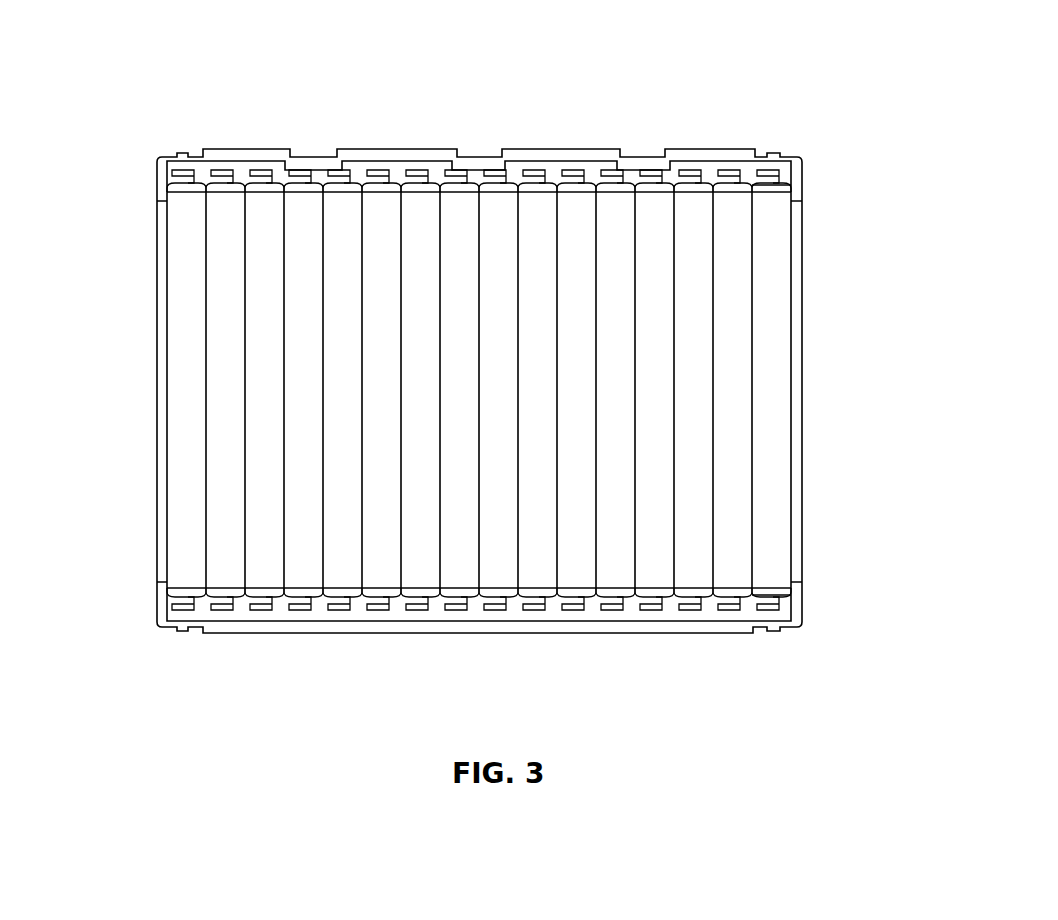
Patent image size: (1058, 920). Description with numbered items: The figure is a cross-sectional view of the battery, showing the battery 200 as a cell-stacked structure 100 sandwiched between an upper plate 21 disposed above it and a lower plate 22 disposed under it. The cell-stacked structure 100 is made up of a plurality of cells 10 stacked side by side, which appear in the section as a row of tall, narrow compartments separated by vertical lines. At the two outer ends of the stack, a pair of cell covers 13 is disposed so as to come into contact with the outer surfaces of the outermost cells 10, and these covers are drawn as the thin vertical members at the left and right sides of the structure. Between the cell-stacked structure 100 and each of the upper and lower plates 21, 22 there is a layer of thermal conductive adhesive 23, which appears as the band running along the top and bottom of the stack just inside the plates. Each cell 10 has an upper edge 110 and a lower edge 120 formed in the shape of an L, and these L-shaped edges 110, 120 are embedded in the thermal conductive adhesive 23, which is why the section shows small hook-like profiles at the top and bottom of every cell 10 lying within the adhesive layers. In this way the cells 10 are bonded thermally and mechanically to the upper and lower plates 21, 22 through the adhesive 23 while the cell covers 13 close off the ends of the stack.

The battery pack 200 is at (369, 118).
The cell-stacked structure 100 is at (815, 495).
The cell 10 is at (777, 385).
The cell cover 13 is at (160, 402).
The upper plate 21 is at (538, 156).
The lower plate 22 is at (591, 629).
The thermal conductive adhesive 23 is at (748, 170).
The upper edge 110 is at (577, 182).
The lower edge 120 is at (543, 612).